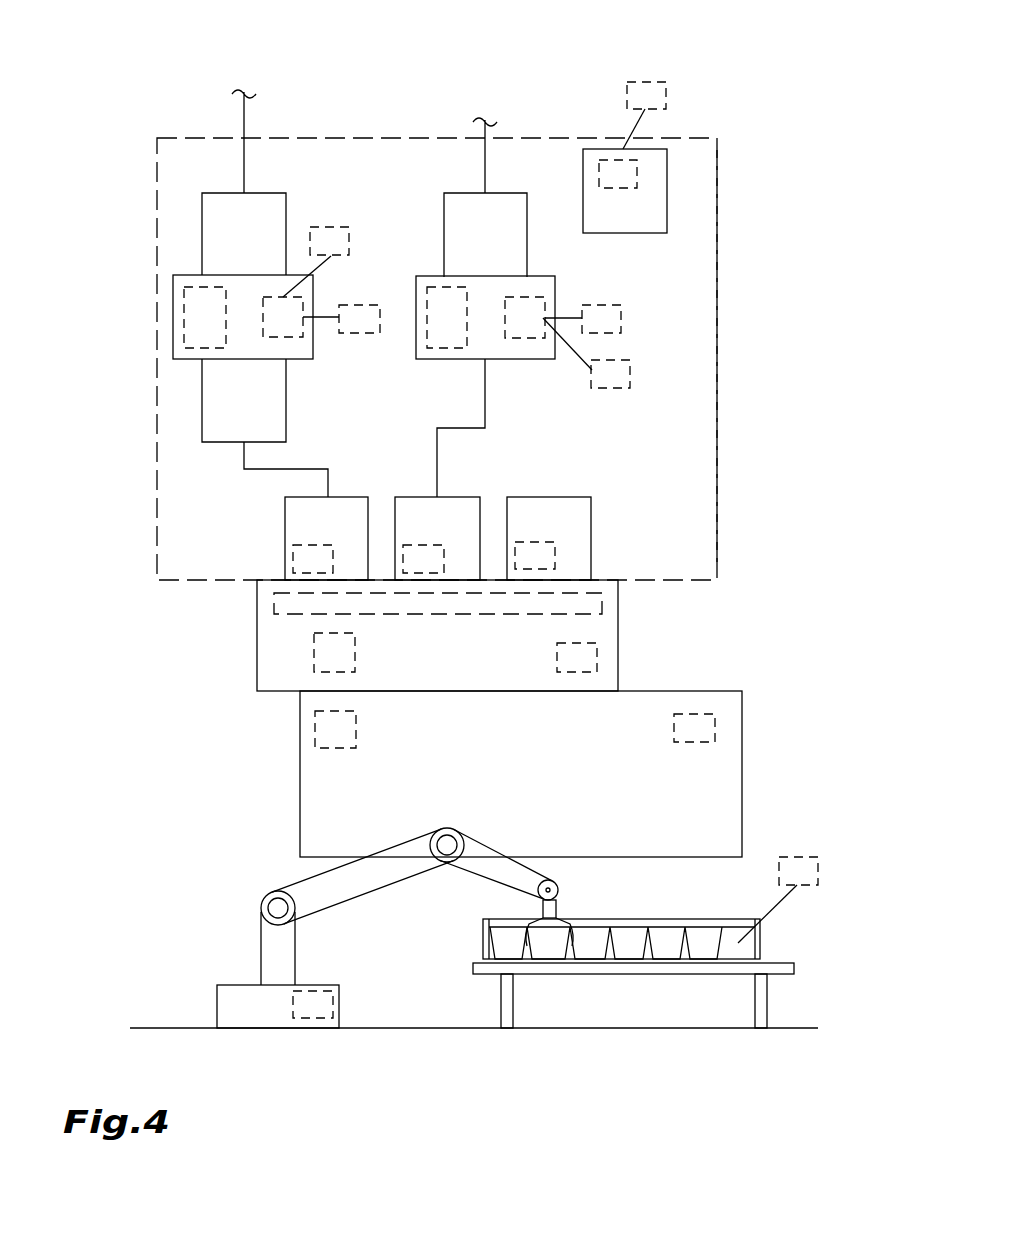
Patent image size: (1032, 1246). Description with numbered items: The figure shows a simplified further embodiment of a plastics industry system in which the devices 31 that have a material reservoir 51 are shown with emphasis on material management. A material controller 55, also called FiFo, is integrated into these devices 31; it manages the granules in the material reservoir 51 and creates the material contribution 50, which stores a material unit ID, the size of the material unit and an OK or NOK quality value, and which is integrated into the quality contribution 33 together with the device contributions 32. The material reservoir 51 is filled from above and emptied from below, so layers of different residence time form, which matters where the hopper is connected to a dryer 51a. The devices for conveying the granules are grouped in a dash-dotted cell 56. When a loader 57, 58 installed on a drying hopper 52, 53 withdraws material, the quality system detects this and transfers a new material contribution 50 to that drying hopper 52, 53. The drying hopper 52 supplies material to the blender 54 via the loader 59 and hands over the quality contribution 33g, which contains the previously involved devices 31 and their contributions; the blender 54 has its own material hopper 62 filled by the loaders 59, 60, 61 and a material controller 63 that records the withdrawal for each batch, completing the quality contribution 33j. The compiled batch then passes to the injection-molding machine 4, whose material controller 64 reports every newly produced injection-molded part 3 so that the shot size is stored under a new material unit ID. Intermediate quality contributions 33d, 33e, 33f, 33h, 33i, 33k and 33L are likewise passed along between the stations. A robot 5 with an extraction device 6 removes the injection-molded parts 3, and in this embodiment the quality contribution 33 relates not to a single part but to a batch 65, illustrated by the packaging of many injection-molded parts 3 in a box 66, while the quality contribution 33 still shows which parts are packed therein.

The device 31 is at (202, 175).
The device contribution 32 is at (620, 173).
The quality contribution 33 is at (802, 872).
The quality contribution 33d is at (643, 90).
The quality contribution 33e is at (356, 318).
The quality contribution 33f is at (606, 318).
The quality contribution 33g is at (310, 559).
The quality contribution 33h is at (420, 553).
The quality contribution 33i is at (532, 550).
The quality contribution 33j is at (575, 660).
The quality contribution 33k is at (693, 727).
The quality contribution 33L is at (312, 1004).
The injection-molded part 3 is at (550, 943).
The injection-molding machine 4 is at (373, 788).
The robot 5 is at (280, 957).
The extraction device 6 is at (537, 920).
The material contribution 50 is at (329, 242).
The material reservoir 51 is at (200, 332).
The dryer 51a is at (643, 210).
The drying hopper 52 is at (243, 327).
The drying hopper 53 is at (483, 327).
The blender 54 is at (302, 624).
The material controller 55 is at (285, 313).
The cell 56 is at (717, 280).
The loader 57 is at (240, 238).
The loader 58 is at (483, 240).
The loader 59 is at (305, 514).
The loader 60 is at (458, 555).
The loader 61 is at (567, 527).
The material hopper 62 is at (273, 603).
The material controller 63 is at (338, 655).
The material controller 64 is at (338, 730).
The batch 65 is at (742, 913).
The box 66 is at (763, 943).